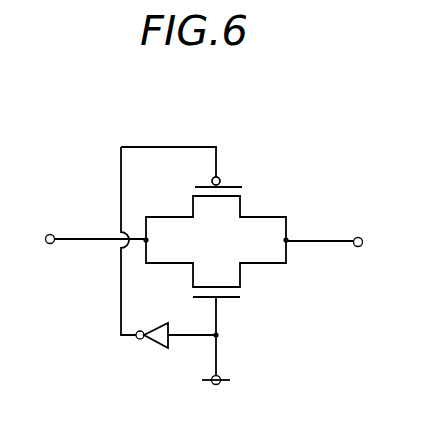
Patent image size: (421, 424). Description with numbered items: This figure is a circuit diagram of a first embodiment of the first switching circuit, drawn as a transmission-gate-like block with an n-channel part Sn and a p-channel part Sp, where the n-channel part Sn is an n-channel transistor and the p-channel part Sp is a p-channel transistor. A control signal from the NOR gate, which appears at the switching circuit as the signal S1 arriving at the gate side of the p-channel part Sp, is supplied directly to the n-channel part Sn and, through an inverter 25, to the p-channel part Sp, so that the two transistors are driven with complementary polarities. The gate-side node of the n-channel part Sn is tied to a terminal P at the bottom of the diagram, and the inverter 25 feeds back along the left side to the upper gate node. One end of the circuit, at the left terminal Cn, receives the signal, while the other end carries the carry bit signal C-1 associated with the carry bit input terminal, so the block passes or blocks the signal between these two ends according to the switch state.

The switch control signal S1 is at (232, 170).
The p-channel part Sp is at (240, 180).
The n-channel part Sn is at (241, 292).
The inverter 25 is at (147, 343).
The input terminal Cn is at (92, 227).
The carry bit signal C-1 is at (325, 232).
The power terminal P is at (216, 391).